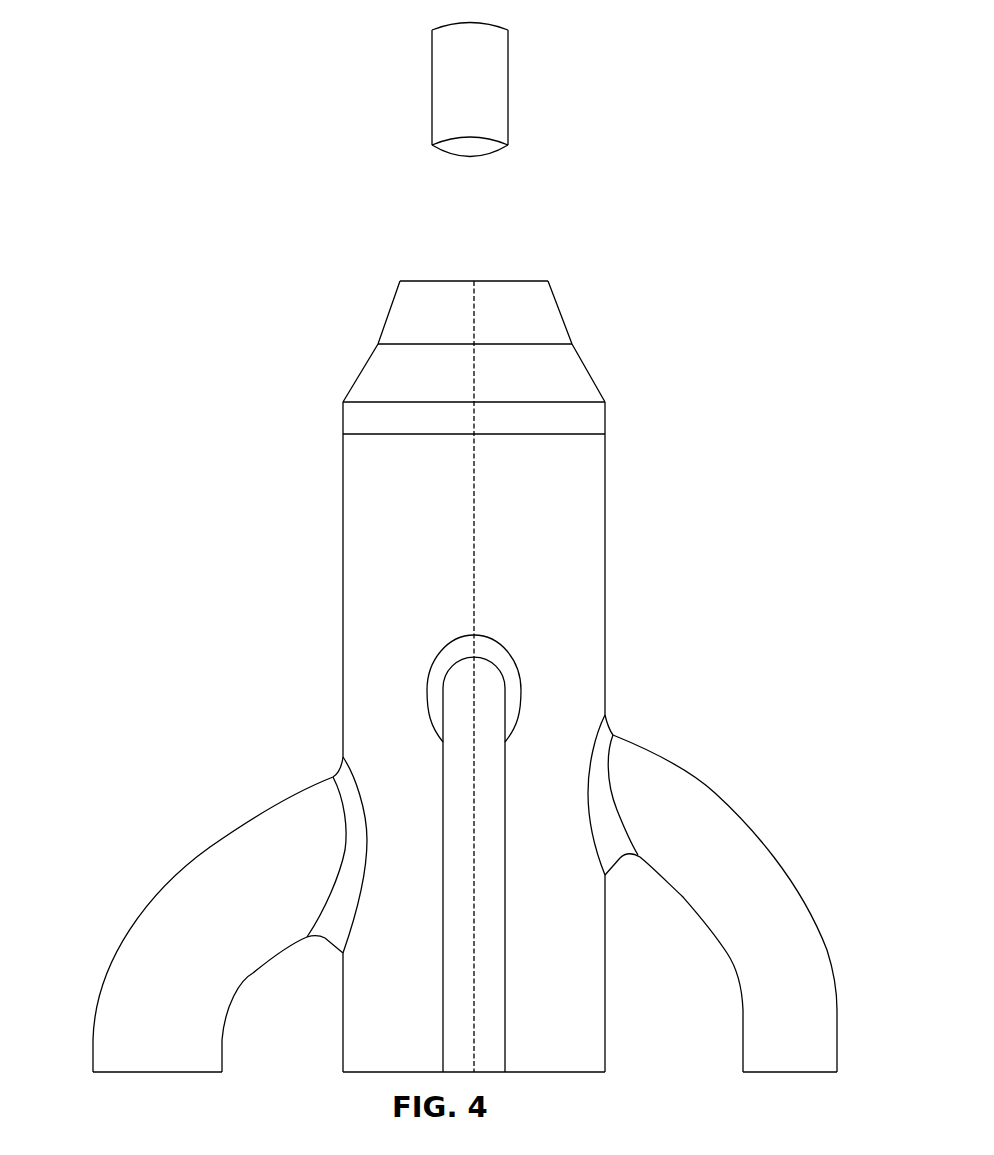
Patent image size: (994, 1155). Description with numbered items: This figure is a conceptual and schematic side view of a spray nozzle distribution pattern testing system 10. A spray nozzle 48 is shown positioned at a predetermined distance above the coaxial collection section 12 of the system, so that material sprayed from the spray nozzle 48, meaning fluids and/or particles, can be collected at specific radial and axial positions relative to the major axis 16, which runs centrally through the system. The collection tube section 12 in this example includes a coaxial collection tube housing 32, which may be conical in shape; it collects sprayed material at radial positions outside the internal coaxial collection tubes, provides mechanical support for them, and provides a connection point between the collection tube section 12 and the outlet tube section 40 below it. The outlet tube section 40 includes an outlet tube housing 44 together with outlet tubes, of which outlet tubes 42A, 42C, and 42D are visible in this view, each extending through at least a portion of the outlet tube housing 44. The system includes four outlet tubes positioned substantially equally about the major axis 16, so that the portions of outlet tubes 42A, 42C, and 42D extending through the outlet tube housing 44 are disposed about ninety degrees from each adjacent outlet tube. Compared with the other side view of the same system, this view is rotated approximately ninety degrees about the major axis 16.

The spray nozzle distribution pattern testing system 10 is at (732, 63).
The collection tube section 12 is at (85, 278).
The major axis 16 is at (474, 283).
The coaxial collection tube housing 32 is at (590, 391).
The outlet tube section 40 is at (85, 443).
The outlet tube 42A is at (455, 788).
The outlet tube 42C is at (716, 793).
The outlet tube 42D is at (210, 847).
The outlet tube housing 44 is at (605, 537).
The spray nozzle 48 is at (433, 87).